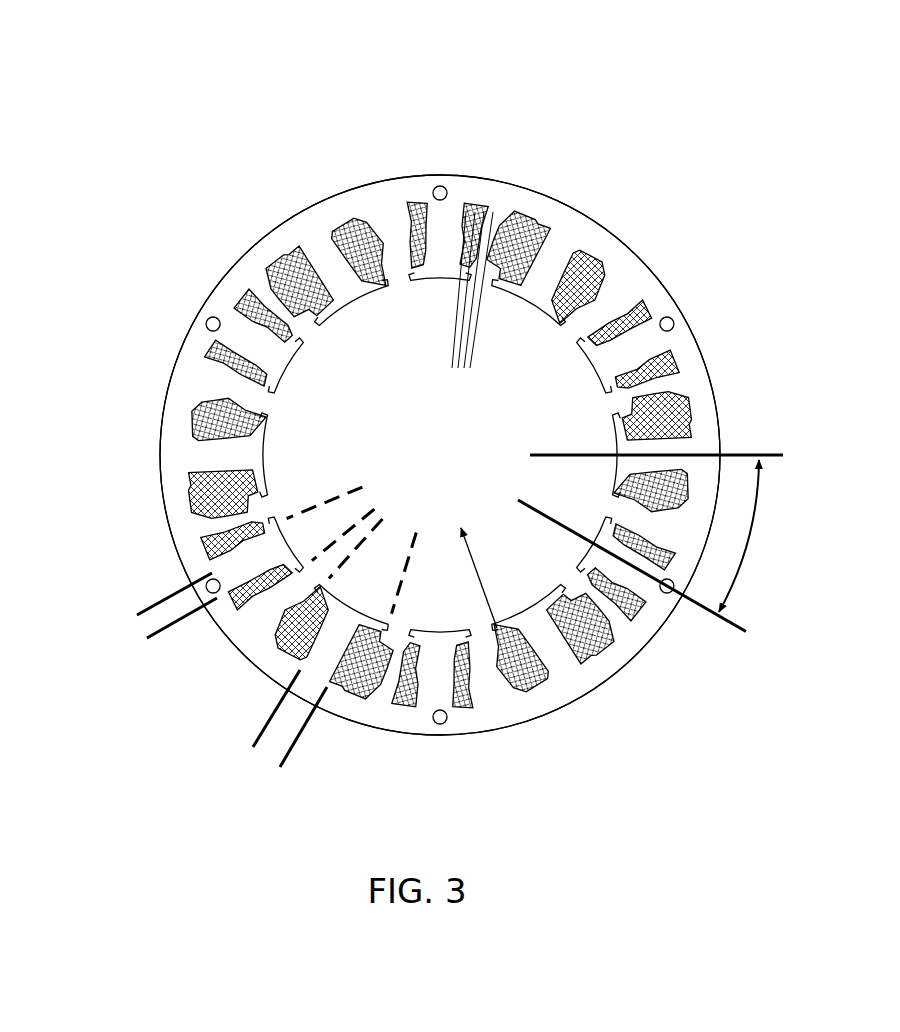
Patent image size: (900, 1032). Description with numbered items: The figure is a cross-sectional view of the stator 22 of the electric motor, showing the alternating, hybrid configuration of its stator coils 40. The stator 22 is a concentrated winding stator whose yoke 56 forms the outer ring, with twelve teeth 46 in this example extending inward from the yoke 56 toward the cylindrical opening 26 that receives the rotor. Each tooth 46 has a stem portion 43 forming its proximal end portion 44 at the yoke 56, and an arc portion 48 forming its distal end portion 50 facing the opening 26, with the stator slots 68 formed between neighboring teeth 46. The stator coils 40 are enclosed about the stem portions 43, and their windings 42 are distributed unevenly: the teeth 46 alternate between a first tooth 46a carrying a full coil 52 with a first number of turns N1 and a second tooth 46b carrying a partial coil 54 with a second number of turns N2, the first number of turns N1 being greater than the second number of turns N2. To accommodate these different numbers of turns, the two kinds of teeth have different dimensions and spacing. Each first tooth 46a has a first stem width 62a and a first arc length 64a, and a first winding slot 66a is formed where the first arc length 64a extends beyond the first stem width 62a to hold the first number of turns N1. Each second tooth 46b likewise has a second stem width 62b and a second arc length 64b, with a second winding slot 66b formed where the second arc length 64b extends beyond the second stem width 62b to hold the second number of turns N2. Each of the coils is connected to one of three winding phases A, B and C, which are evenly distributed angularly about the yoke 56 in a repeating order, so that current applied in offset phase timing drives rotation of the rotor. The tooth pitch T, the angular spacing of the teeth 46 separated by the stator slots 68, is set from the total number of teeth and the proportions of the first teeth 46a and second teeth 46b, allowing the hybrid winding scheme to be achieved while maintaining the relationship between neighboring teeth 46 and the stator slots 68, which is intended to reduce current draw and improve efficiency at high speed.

The stator 22 is at (603, 105).
The cylindrical opening 26 is at (524, 690).
The stator coils 40 is at (440, 455).
The full coil 52 is at (540, 222).
The partial coil 54 is at (438, 238).
The windings 42 is at (698, 428).
The stem portion 43 is at (272, 364).
The proximal end portion 44 is at (196, 451).
The tooth 46 is at (290, 320).
The first tooth 46a is at (664, 385).
The second tooth 46b is at (290, 320).
The arc portion 48 is at (218, 373).
The distal end portion 50 is at (197, 512).
The yoke 56 is at (692, 382).
The first stem width 62a is at (250, 708).
The second stem width 62b is at (152, 580).
The first arc length 64a is at (394, 592).
The second arc length 64b is at (305, 513).
The first winding slot 66a is at (380, 648).
The second winding slot 66b is at (246, 532).
The stator slots 68 is at (313, 338).
The first number of turns N1 is at (242, 336).
The second number of turns N2 is at (220, 364).
The tooth pitch T is at (754, 536).